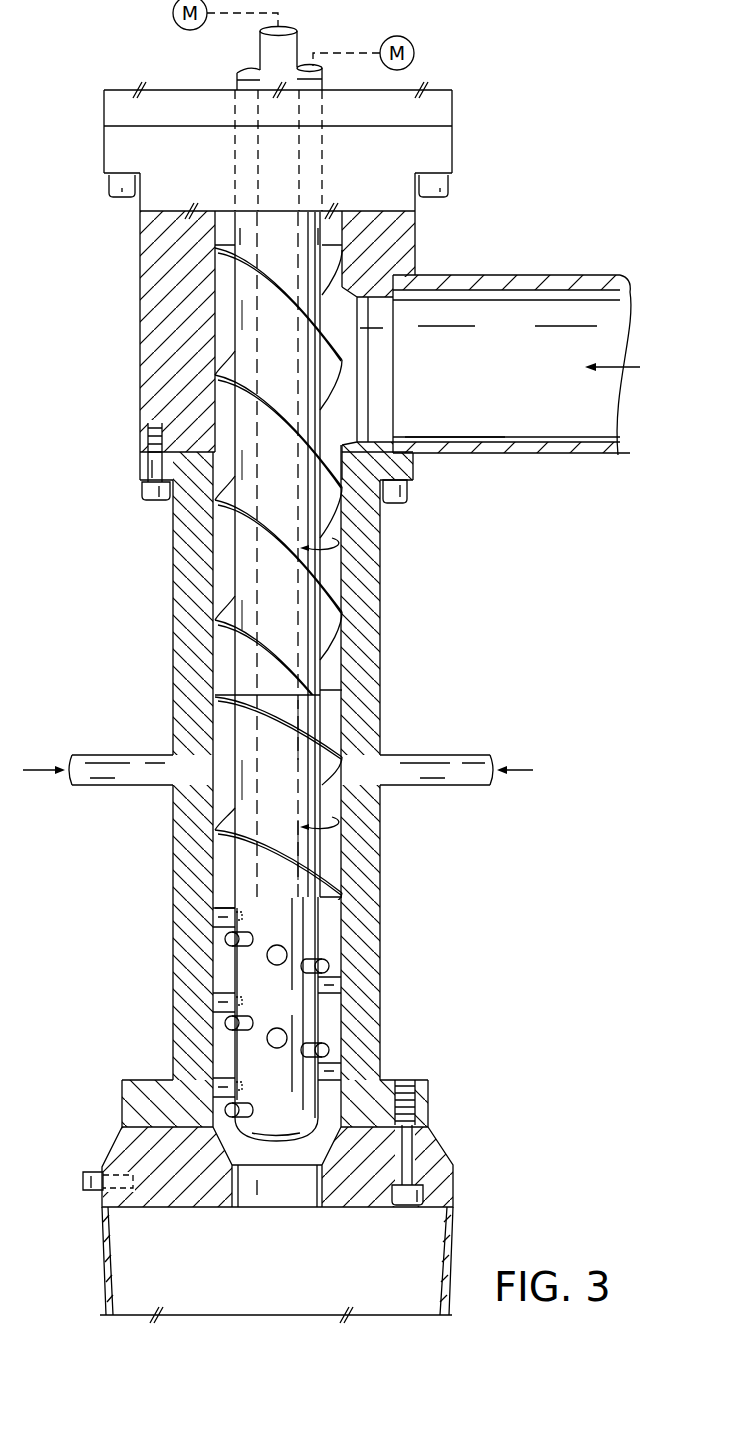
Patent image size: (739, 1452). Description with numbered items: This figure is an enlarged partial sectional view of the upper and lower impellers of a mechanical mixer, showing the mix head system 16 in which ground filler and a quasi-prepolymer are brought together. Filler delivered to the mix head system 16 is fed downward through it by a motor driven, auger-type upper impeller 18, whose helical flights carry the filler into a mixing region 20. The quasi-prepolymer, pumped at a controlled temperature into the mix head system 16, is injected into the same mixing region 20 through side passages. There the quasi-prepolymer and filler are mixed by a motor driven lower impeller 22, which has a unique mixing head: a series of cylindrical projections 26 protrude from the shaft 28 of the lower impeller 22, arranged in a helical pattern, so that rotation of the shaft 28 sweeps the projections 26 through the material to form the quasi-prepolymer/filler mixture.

The mix head system 16 is at (112, 365).
The upper impeller 18 is at (232, 503).
The mixing region 20 is at (330, 795).
The lower impeller 22 is at (336, 1010).
The cylindrical projections 26 is at (270, 957).
The shaft 28 is at (310, 933).